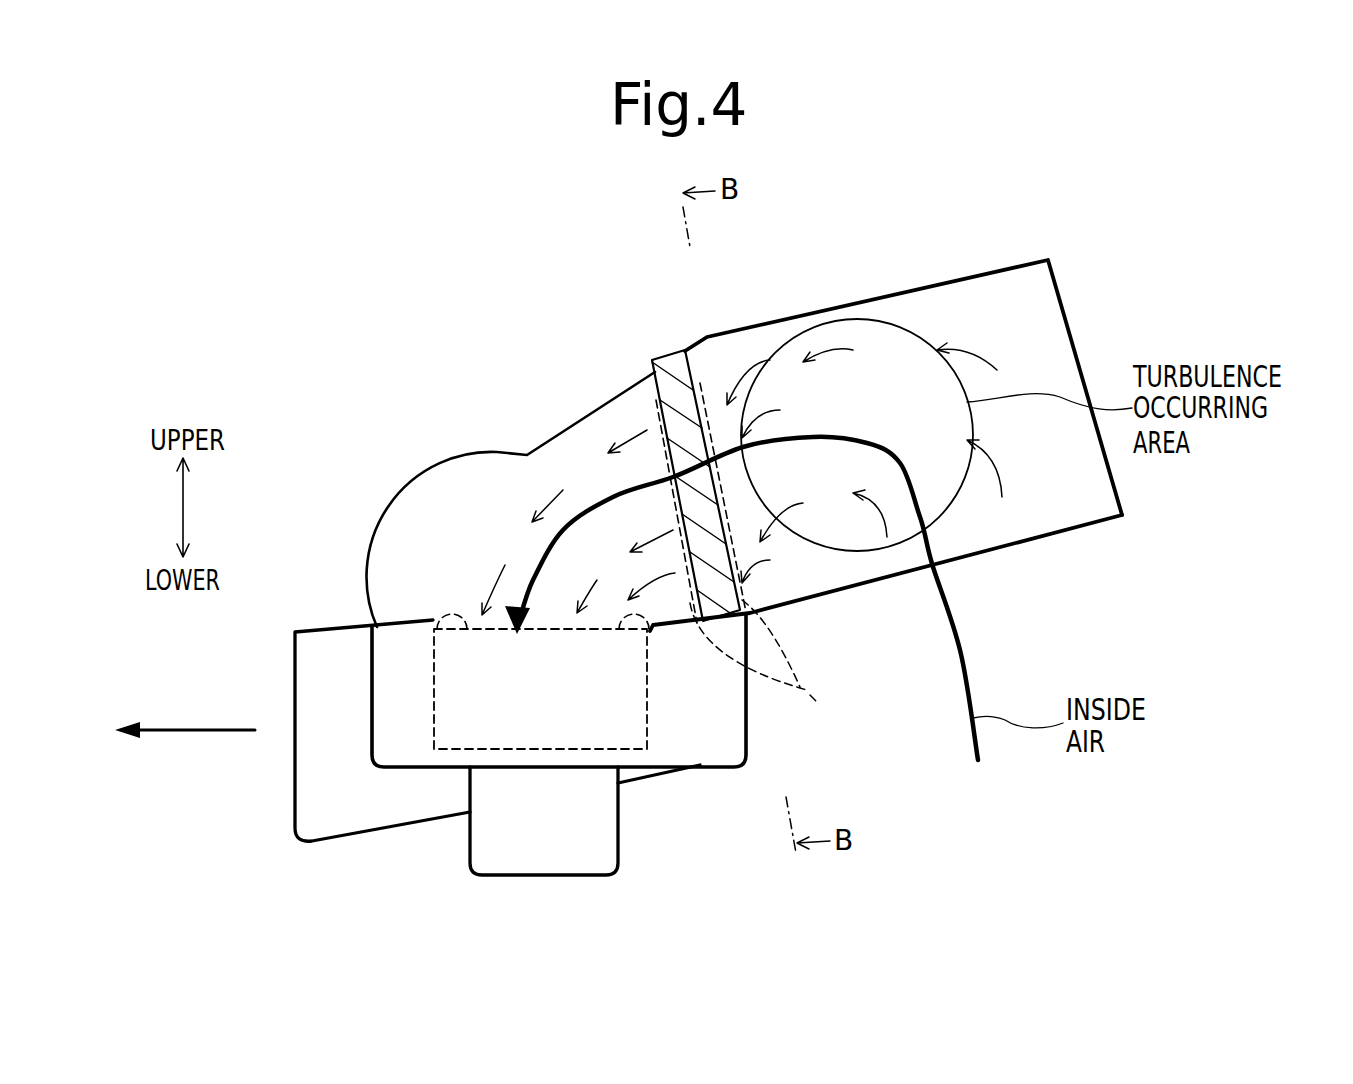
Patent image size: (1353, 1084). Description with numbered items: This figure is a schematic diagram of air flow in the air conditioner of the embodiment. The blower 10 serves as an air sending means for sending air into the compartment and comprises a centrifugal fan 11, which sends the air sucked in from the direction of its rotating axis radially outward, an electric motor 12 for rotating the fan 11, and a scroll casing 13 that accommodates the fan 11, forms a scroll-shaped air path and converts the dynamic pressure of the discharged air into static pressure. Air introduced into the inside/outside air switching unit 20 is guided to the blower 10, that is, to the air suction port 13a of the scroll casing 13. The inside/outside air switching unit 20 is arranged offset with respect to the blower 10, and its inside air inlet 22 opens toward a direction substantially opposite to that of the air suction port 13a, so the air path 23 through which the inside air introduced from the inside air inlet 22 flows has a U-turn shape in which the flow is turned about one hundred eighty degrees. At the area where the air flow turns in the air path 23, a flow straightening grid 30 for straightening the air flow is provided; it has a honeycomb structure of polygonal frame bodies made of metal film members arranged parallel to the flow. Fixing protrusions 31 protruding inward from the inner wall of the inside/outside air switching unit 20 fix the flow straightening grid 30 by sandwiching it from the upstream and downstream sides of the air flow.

The blower 10 is at (650, 783).
The centrifugal fan 11 is at (647, 707).
The electric motor 12 is at (548, 857).
The scroll casing 13 is at (383, 833).
The air suction port 13a is at (507, 613).
The inside/outside air switching unit 20 is at (770, 307).
The inside air inlet 22 is at (933, 560).
The air path 23 is at (822, 568).
The flow straightening grid 30 is at (677, 367).
The fixing protrusions 31 is at (701, 369).